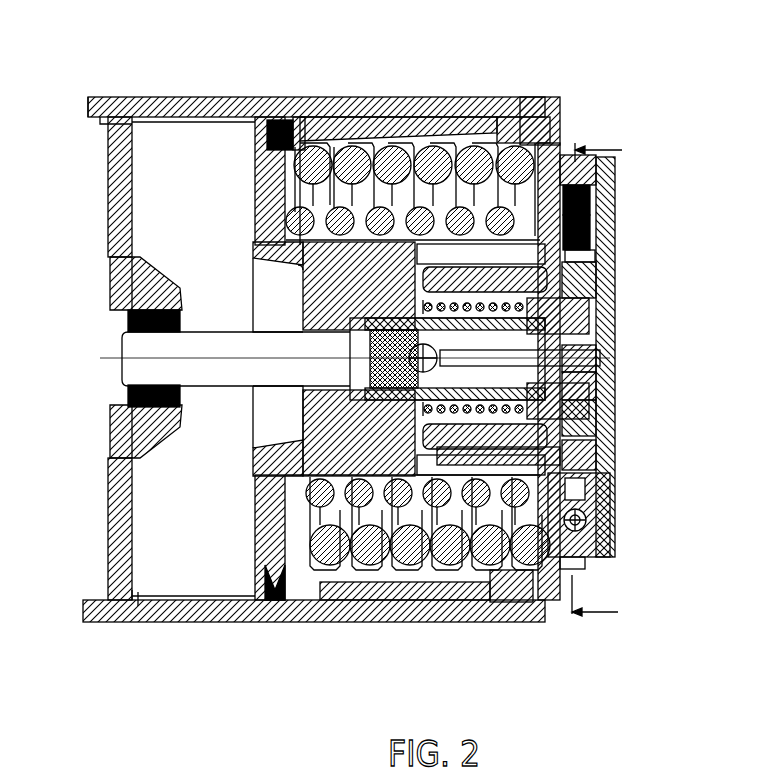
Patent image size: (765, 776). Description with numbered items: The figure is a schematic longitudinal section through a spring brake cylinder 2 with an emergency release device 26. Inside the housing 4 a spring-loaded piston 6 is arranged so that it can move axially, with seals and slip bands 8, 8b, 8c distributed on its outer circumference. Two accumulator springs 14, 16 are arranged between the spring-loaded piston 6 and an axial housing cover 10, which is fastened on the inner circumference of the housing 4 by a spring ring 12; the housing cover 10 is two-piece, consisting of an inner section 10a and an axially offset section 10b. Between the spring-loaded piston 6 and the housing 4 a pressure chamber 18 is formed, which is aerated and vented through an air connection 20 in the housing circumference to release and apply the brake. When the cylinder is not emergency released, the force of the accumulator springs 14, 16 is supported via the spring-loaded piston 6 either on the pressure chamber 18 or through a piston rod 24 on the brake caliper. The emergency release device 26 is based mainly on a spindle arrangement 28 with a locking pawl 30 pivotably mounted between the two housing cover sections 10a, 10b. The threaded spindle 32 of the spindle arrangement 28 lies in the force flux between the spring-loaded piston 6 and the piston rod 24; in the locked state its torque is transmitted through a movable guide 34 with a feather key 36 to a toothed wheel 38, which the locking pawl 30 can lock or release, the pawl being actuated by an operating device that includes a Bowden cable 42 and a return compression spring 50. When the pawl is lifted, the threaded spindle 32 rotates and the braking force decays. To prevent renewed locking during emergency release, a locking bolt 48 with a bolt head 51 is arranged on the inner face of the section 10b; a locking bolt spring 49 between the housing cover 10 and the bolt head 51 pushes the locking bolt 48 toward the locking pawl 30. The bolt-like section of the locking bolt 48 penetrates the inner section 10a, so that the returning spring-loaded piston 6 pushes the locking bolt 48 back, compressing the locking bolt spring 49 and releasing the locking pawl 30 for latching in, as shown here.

The spring brake cylinder 2 is at (181, 70).
The housing 4 is at (130, 128).
The spring-loaded piston 6 is at (386, 125).
The seals/slip bands 8 is at (265, 137).
The seal/slip band 8b is at (296, 117).
The seal/slip band 8c is at (498, 117).
The housing cover 10 is at (560, 130).
The inner housing cover section 10a is at (565, 568).
The housing cover section 10b is at (580, 160).
The spring ring 12 is at (548, 112).
The accumulator spring 14 is at (254, 482).
The accumulator spring 16 is at (260, 546).
The pressure chamber 18 is at (178, 492).
The air connection 20 is at (112, 600).
The piston rod 24 is at (158, 345).
The emergency release device 26 is at (615, 328).
The spindle arrangement 28 is at (612, 385).
The locking pawl 30 is at (616, 200).
The threaded spindle 32 is at (612, 325).
The guide 34 is at (612, 305).
The feather key 36 is at (600, 280).
The toothed wheel 38 is at (612, 445).
The Bowden cable 42 is at (612, 515).
The locking bolt 48 is at (605, 232).
The locking bolt spring 49 is at (602, 258).
The return compression spring 50 is at (612, 412).
The bolt head 51 is at (600, 250).